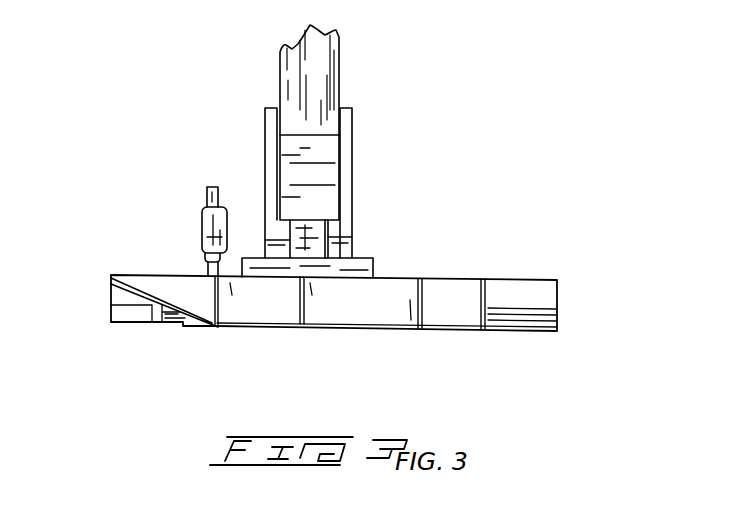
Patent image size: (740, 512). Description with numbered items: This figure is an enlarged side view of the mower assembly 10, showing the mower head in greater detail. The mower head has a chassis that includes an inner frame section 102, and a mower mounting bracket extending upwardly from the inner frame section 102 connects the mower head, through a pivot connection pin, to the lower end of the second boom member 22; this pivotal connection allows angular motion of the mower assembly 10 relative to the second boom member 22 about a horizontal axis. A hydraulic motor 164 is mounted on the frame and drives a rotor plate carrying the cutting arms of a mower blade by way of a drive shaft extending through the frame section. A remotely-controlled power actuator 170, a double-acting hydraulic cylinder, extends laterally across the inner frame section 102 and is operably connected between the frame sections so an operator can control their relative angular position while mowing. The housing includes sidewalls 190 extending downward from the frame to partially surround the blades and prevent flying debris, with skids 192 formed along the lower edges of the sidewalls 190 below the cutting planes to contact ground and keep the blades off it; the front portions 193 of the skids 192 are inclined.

The mower assembly 10 is at (140, 256).
The second boom member 22 is at (290, 90).
The inner frame section 102 is at (435, 305).
The hydraulic motor 164 is at (327, 229).
The remotely-controlled power actuator 170 is at (205, 232).
The sidewalls 190 is at (458, 305).
The skids 192 is at (448, 331).
The front portions of skids 193 is at (180, 318).